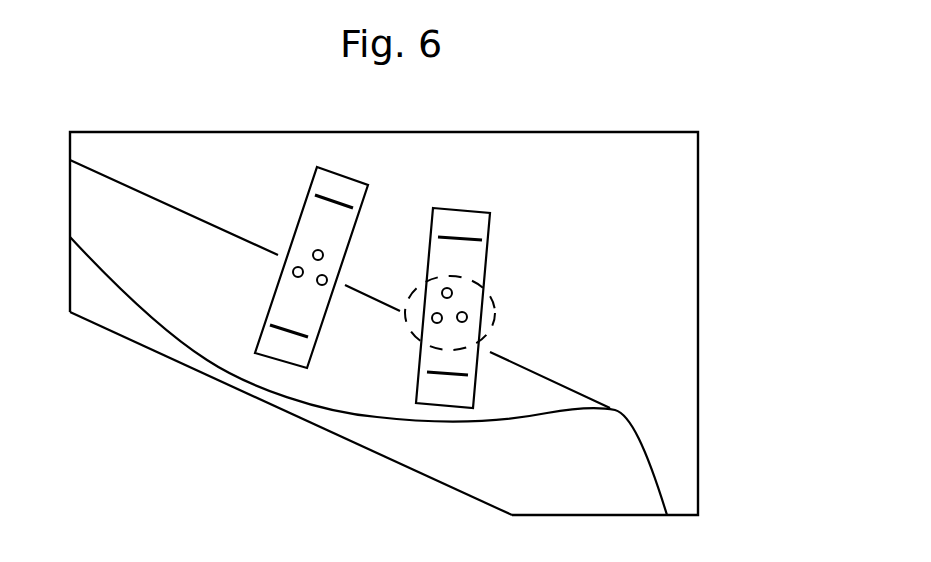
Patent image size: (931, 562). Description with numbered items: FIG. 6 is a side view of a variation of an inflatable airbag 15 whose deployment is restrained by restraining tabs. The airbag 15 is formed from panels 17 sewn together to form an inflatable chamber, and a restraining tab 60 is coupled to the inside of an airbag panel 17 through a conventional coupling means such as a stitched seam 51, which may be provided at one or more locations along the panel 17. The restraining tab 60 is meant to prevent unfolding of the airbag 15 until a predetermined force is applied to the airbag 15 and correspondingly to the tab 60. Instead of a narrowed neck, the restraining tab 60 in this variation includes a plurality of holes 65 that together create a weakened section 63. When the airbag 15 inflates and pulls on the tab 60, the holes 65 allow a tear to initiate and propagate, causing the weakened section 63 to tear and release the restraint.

The inflatable airbag 15 is at (731, 260).
The airbag panel 17 is at (682, 430).
The stitched seam 51 is at (467, 233).
The restraining tab 60 is at (487, 268).
The weakened section 63 is at (493, 303).
The holes 65 is at (466, 320).